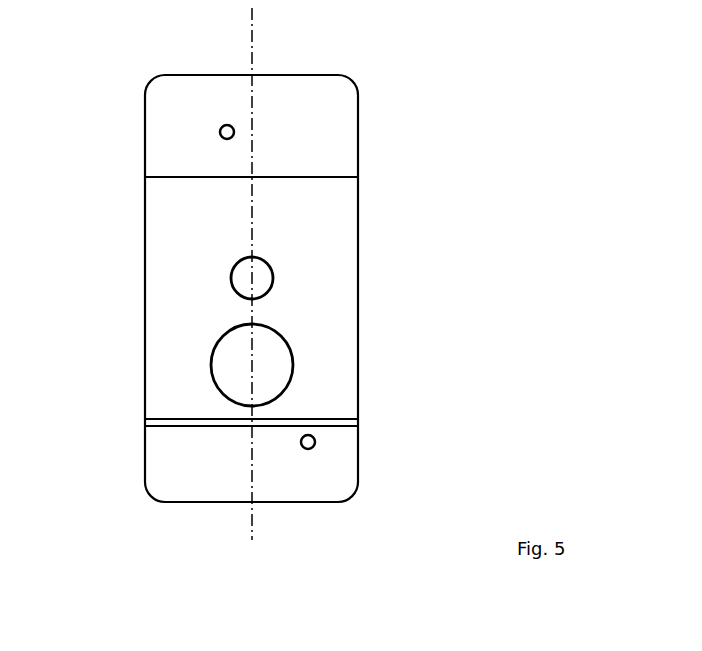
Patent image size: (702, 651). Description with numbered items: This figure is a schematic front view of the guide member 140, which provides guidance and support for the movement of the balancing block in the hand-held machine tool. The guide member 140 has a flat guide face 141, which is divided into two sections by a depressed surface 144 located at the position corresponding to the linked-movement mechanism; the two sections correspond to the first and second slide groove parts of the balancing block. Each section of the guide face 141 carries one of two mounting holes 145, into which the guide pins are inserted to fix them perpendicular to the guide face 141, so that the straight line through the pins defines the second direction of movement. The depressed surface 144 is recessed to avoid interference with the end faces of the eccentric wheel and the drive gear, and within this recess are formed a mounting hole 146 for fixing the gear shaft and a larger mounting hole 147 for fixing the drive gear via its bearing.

The guide member 140 is at (152, 214).
The guide face 141 is at (338, 112).
The depressed surface 144 is at (165, 302).
The mounting holes 145 is at (222, 128).
The mounting hole 146 is at (262, 272).
The mounting hole 147 is at (278, 348).